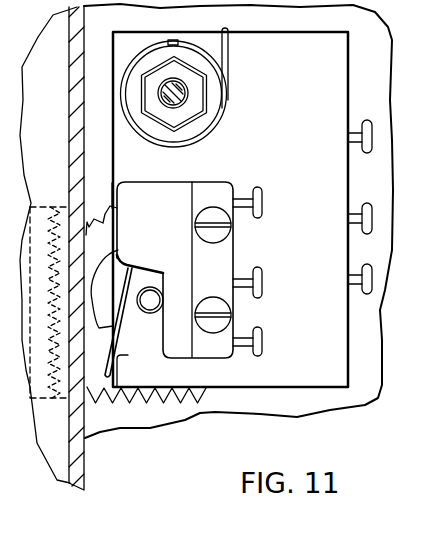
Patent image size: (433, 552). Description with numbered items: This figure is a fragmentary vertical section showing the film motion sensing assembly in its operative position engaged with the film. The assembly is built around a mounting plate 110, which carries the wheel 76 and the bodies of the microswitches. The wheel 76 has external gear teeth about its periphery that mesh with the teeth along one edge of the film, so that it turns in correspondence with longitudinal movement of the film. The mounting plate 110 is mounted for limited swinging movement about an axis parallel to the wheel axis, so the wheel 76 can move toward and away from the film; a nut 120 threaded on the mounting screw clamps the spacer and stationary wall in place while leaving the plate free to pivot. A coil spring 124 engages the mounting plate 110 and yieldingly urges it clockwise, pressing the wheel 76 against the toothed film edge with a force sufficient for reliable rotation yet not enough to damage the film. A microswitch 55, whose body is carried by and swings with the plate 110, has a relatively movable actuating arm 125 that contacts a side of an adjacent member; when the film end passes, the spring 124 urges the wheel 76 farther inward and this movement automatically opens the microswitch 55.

The mounting plate 110 is at (315, 375).
The coil spring 124 is at (225, 82).
The nut 120 is at (193, 107).
The microswitch 55 is at (218, 268).
The wheel 76 is at (100, 195).
The actuating arm 125 is at (119, 353).